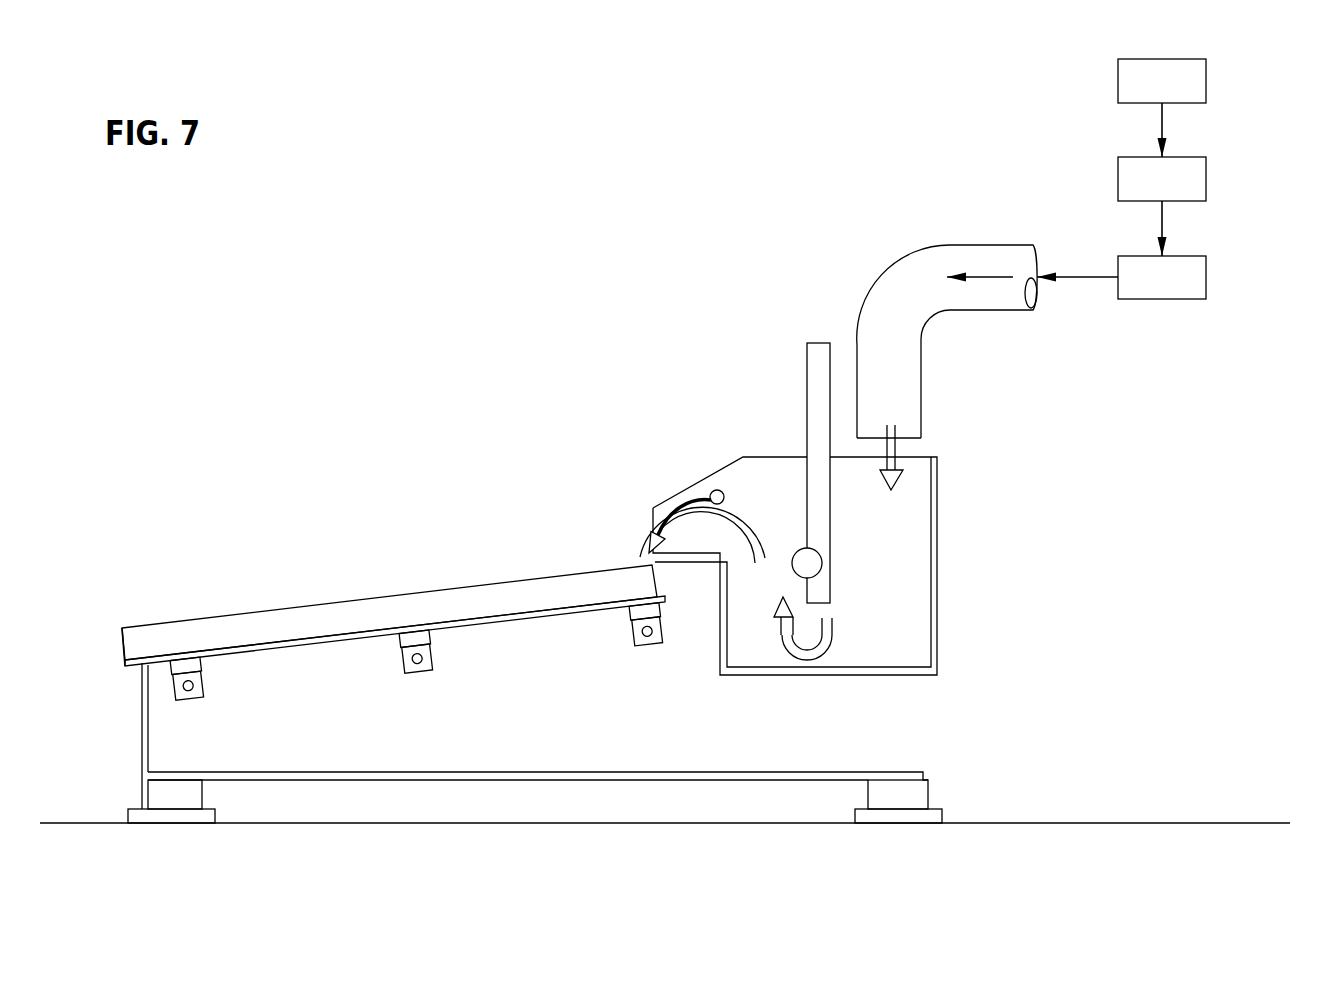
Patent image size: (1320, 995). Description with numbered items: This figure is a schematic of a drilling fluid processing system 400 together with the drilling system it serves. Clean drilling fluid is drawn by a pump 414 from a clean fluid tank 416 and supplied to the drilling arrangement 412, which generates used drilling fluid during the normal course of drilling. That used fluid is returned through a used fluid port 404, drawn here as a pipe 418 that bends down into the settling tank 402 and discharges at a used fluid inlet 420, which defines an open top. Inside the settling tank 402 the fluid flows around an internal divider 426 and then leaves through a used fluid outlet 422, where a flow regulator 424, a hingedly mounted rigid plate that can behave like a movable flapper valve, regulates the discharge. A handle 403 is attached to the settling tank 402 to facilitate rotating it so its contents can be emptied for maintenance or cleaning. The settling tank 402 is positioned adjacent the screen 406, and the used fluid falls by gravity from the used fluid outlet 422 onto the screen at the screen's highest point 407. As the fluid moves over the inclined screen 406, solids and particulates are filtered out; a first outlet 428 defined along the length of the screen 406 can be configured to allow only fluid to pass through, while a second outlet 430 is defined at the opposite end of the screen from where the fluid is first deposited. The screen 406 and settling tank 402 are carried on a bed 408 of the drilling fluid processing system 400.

The drilling fluid processing system 400 is at (437, 292).
The settling tank 402 is at (970, 573).
The handle 403 is at (815, 377).
The used fluid port 404 is at (928, 403).
The screen 406 is at (322, 582).
The screen's highest point 407 is at (633, 587).
The bed 408 is at (575, 793).
The drilling arrangement 412 is at (1206, 275).
The pump 414 is at (1206, 177).
The clean fluid tank 416 is at (1206, 79).
The supply pipe 418 is at (977, 238).
The used fluid inlet 420 is at (928, 450).
The used fluid outlet 422 is at (643, 513).
The flow regulator 424 is at (693, 503).
The internal divider 426 is at (807, 498).
The first outlet 428 is at (490, 630).
The second outlet 430 is at (112, 643).